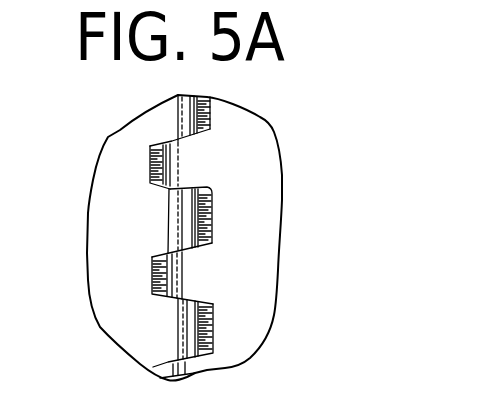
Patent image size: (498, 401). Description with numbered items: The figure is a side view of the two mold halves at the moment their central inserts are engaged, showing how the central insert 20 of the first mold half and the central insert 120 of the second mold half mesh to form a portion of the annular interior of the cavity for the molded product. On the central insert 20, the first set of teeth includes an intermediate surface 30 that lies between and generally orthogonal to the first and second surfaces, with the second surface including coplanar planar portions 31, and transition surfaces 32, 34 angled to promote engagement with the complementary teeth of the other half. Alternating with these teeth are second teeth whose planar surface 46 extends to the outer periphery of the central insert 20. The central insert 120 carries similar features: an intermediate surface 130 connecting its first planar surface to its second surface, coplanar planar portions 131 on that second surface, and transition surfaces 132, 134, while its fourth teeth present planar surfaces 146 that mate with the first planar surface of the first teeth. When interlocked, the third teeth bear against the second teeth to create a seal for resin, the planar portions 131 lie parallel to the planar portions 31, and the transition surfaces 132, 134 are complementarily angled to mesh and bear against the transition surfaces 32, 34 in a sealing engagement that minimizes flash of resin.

The central insert 20 is at (262, 122).
The central insert 120 is at (132, 127).
The intermediate surface 130 is at (206, 198).
The planar portions 131 is at (214, 231).
The transition surface 132 is at (203, 190).
The transition surface 134 is at (208, 250).
The intermediate surface 30 is at (152, 257).
The planar portions 31 is at (160, 292).
The transition surface 32 is at (171, 253).
The transition surface 34 is at (172, 188).
The planar surface 46 is at (215, 222).
The planar surfaces 146 is at (150, 275).